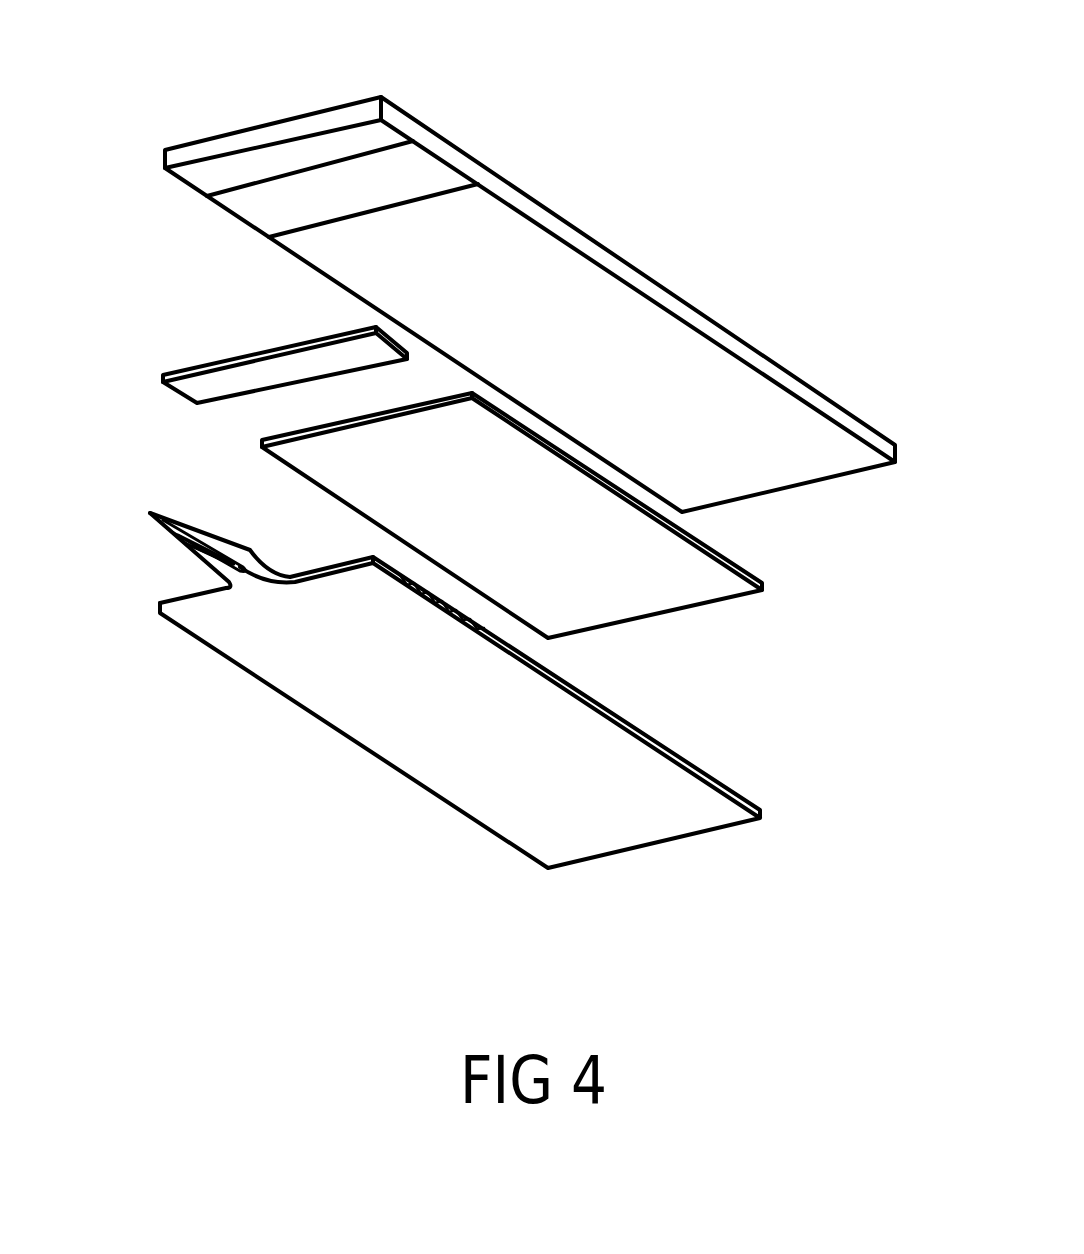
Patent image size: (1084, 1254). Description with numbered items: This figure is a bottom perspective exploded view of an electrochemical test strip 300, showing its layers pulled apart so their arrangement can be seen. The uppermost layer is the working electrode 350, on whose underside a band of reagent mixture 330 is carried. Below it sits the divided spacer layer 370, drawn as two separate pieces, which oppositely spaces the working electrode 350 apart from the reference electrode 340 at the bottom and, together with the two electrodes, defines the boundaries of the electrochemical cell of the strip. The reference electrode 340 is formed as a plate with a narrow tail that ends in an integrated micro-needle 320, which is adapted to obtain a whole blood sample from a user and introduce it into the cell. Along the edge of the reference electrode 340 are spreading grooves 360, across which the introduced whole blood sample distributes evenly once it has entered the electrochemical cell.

The electrochemical test strip 300 is at (674, 120).
The reagent mixture 330 is at (415, 167).
The working electrode 350 is at (740, 482).
The divided spacer layer 370 is at (233, 375).
The spreading grooves 360 is at (445, 602).
The reference electrode 340 is at (577, 799).
The integrated micro-needle 320 is at (180, 525).